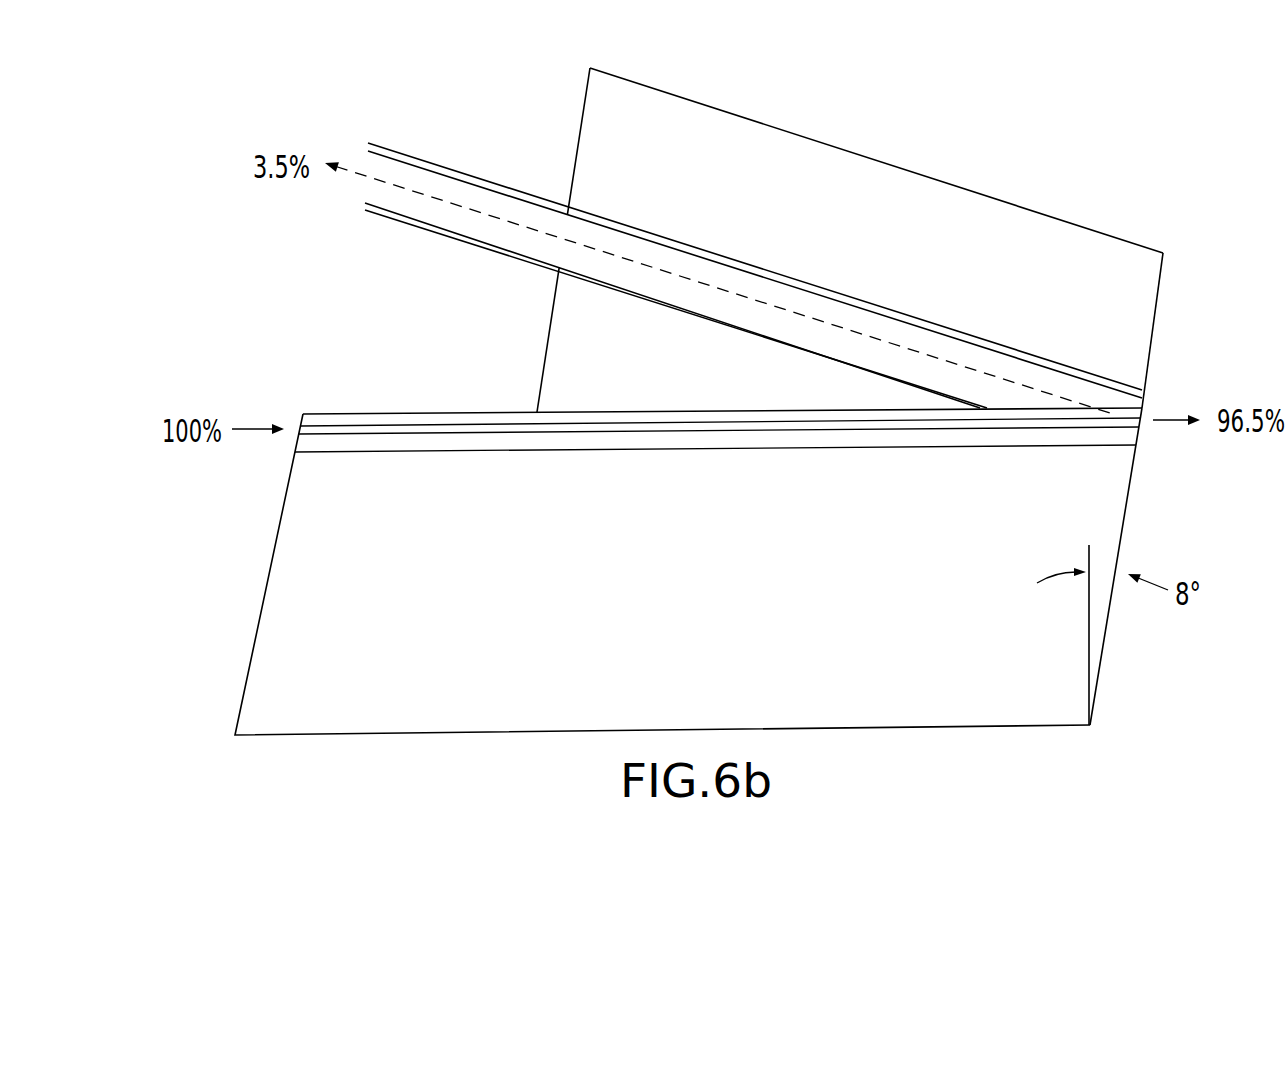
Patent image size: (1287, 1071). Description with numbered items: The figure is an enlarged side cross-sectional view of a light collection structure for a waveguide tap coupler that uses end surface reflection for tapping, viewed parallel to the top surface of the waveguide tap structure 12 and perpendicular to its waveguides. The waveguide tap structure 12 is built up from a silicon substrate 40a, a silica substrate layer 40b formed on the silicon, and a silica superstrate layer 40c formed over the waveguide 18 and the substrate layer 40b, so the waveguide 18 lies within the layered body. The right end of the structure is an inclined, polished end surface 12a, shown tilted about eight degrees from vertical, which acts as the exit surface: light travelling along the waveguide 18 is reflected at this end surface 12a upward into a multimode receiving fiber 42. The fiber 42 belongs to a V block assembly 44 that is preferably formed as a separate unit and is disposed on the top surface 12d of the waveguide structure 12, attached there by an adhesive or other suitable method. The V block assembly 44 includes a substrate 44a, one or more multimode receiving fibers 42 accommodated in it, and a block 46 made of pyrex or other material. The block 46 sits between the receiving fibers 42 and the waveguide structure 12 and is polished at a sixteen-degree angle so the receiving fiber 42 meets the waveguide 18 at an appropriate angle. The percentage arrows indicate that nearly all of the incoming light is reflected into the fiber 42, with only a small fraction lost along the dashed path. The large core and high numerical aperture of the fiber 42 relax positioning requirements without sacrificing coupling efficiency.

The waveguide tap structure 12 is at (250, 650).
The inclined end surface 12a is at (1125, 518).
The top surface 12d is at (385, 412).
The waveguide 18 is at (628, 429).
The silicon substrate 40a is at (597, 668).
The silica substrate layer 40b is at (400, 440).
The silica superstrate layer 40c is at (777, 418).
The multimode receiving fiber 42 is at (412, 227).
The V block assembly 44 is at (1097, 228).
The substrate 44a is at (758, 143).
The block 46 is at (573, 348).